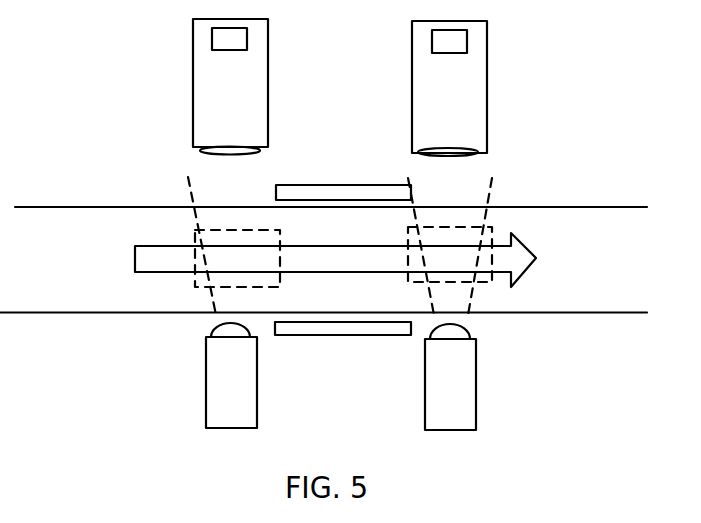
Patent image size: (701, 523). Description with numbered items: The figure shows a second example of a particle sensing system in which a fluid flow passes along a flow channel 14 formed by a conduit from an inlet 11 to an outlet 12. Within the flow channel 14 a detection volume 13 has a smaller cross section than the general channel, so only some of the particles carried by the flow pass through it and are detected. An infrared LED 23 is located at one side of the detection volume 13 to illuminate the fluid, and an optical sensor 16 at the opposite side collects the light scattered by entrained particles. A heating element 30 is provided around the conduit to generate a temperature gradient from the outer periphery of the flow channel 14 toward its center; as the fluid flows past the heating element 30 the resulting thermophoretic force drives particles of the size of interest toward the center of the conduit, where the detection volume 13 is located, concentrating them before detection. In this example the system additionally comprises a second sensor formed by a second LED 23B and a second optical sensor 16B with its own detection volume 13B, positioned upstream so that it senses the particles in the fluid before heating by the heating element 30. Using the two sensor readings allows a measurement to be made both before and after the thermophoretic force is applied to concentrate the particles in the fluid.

The inlet 11 is at (40, 274).
The outlet 12 is at (645, 275).
The detection volume 13 is at (490, 246).
The detection volume of second sensor 13B is at (178, 246).
The flow channel 14 is at (602, 207).
The optical sensor 16 is at (488, 43).
The second optical sensor 16B is at (269, 42).
The infrared LED 23 is at (425, 417).
The second infrared LED 23B is at (206, 413).
The heating element 30 is at (332, 185).